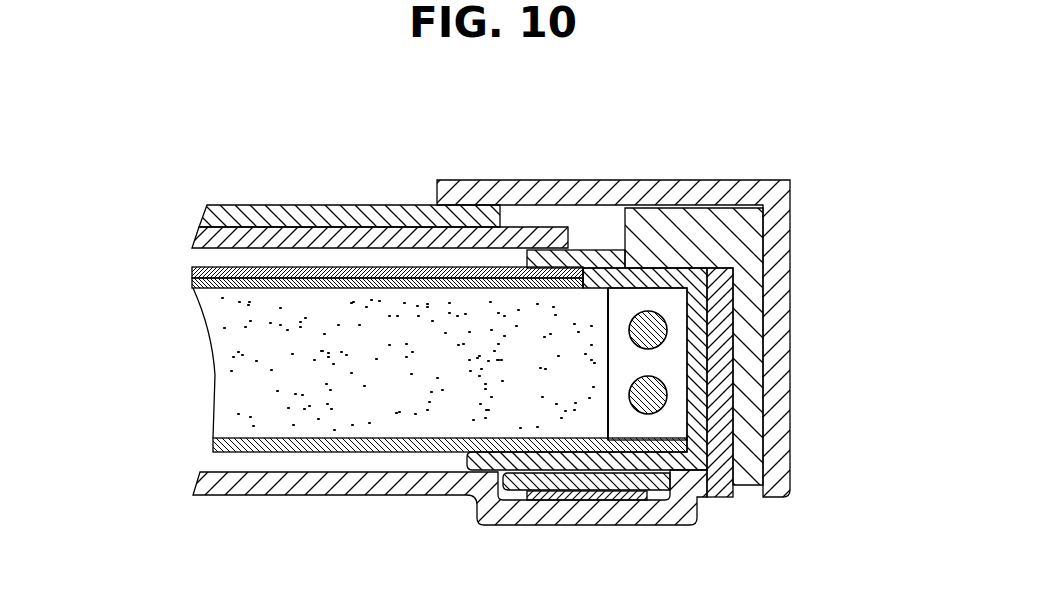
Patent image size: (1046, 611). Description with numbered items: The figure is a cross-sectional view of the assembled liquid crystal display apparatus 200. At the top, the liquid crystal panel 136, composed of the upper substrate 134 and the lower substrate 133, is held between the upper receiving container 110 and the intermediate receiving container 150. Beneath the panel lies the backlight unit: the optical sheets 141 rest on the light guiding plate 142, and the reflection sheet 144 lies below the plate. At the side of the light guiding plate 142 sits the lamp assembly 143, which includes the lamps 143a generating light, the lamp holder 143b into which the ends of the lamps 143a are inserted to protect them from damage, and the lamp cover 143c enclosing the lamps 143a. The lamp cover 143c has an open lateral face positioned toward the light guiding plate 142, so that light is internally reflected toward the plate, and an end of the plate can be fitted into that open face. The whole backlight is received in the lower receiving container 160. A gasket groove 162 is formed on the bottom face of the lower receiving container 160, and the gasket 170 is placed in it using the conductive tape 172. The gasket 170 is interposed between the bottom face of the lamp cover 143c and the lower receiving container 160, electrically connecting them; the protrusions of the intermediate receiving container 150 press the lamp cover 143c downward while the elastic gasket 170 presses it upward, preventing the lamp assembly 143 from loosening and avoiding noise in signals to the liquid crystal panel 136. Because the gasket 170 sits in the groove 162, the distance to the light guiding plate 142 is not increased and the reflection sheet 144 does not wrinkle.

The liquid crystal display apparatus 200 is at (300, 148).
The upper receiving container 110 is at (768, 233).
The intermediate receiving container 150 is at (745, 296).
The lower receiving container 160 is at (740, 331).
The liquid crystal panel 136 is at (307, 227).
The upper substrate 134 is at (207, 208).
The lower substrate 133 is at (196, 241).
The optical sheets 141 is at (187, 268).
The light guiding plate 142 is at (220, 348).
The reflection sheet 144 is at (213, 440).
The lamp assembly 143 is at (710, 369).
The lamps 143a is at (664, 382).
The lamp holder 143b is at (678, 400).
The lamp cover 143c is at (695, 427).
The gasket groove 162 is at (515, 515).
The gasket 170 is at (570, 495).
The conductive tape 172 is at (633, 503).